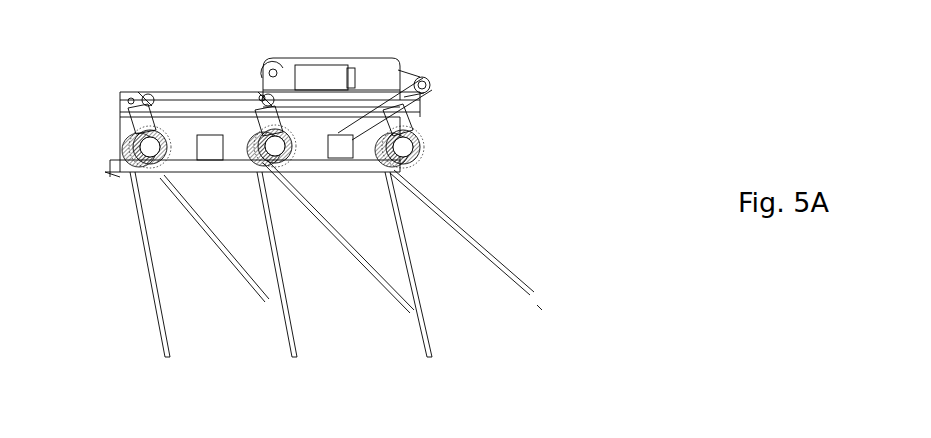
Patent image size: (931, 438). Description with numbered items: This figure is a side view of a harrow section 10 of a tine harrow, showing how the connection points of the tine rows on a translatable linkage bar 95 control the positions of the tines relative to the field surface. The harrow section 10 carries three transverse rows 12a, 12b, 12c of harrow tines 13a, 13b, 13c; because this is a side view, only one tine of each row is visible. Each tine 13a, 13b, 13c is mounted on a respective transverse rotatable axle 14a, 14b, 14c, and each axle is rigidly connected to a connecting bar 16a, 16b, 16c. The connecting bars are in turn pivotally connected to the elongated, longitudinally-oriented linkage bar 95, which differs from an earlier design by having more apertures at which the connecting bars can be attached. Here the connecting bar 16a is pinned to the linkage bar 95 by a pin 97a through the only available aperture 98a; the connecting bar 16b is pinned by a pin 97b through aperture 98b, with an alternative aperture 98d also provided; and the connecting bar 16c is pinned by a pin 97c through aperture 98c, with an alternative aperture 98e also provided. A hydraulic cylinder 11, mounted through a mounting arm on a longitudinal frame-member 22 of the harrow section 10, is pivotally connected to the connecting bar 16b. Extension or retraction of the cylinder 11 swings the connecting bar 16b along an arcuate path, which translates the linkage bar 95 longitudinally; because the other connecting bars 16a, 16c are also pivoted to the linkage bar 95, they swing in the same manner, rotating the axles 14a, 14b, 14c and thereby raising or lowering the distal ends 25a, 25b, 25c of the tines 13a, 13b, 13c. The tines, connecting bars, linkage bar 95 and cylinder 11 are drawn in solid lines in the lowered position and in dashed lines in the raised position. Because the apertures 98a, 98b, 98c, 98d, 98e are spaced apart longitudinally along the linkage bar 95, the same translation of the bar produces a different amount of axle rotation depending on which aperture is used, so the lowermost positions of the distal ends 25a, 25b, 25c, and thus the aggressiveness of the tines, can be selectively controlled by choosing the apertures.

The harrow section 10 is at (560, 155).
The hydraulic cylinder 11 is at (327, 63).
The transverse row 12a is at (402, 147).
The transverse row 12b is at (277, 147).
The transverse row 12c is at (148, 148).
The harrow tine 13a is at (412, 285).
The harrow tine 13b is at (280, 282).
The harrow tine 13c is at (153, 278).
The transverse rotatable axle 14a is at (433, 166).
The transverse rotatable axle 14b is at (299, 162).
The transverse rotatable axle 14c is at (142, 166).
The connecting bar 16a is at (405, 115).
The connecting bar 16b is at (270, 113).
The connecting bar 16c is at (140, 107).
The longitudinal frame-member 22 is at (425, 163).
The distal end 25a is at (427, 358).
The distal end 25b is at (292, 358).
The distal end 25c is at (163, 358).
The linkage bar 95 is at (187, 98).
The pin 97a is at (473, 87).
The pin 97b is at (228, 68).
The pin 97c is at (98, 75).
The aperture 98a is at (400, 102).
The aperture 98b is at (270, 100).
The aperture 98c is at (147, 98).
The aperture 98d is at (268, 100).
The aperture 98e is at (130, 100).